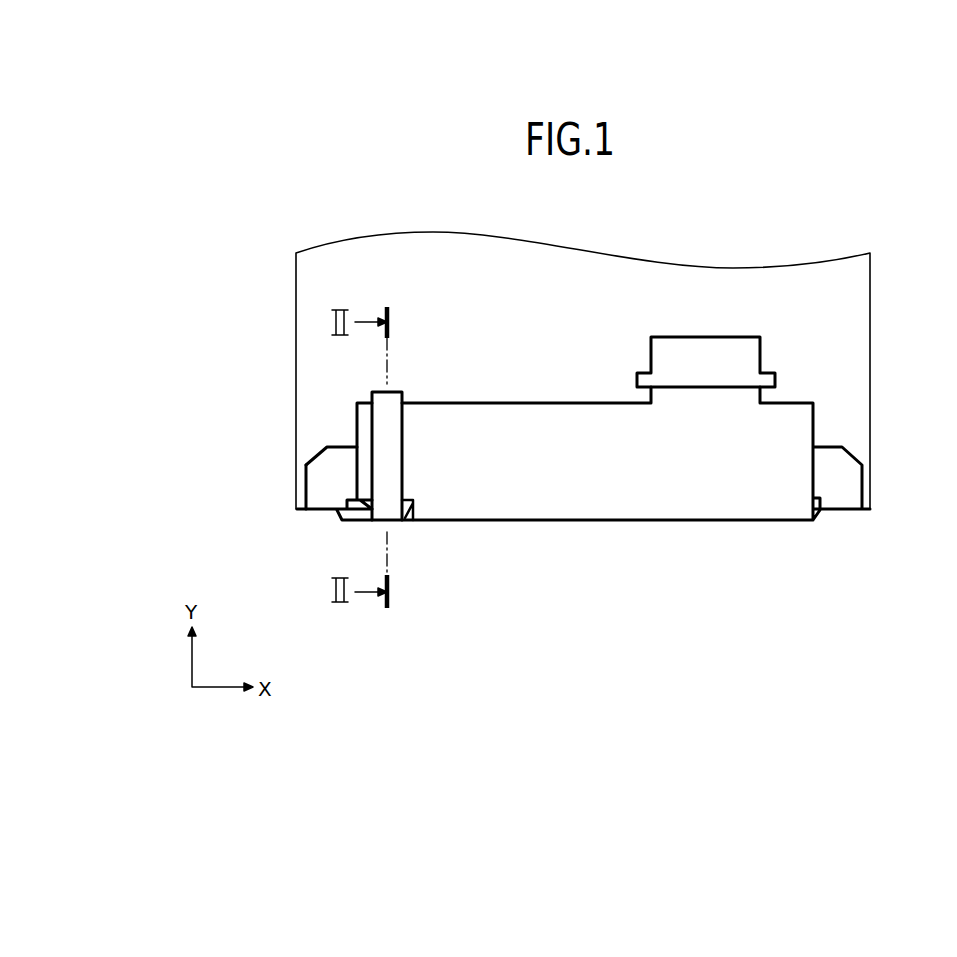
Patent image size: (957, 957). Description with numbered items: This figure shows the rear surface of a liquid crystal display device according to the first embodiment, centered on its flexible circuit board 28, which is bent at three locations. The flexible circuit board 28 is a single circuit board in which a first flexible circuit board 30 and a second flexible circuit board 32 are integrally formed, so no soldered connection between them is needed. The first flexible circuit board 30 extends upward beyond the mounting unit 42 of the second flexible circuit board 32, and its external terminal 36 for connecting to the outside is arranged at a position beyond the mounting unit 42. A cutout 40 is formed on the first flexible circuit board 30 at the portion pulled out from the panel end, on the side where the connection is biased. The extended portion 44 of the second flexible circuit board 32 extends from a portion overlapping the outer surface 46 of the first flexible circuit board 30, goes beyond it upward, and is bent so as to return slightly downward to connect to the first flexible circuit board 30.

The flexible circuit board 28 is at (226, 453).
The first flexible circuit board 30 is at (357, 485).
The second flexible circuit board 32 is at (305, 476).
The external terminal 36 is at (760, 358).
The cutout 40 is at (408, 521).
The mounting unit 42 is at (323, 463).
The extended portion 44 is at (382, 415).
The outer surface 46 is at (603, 473).